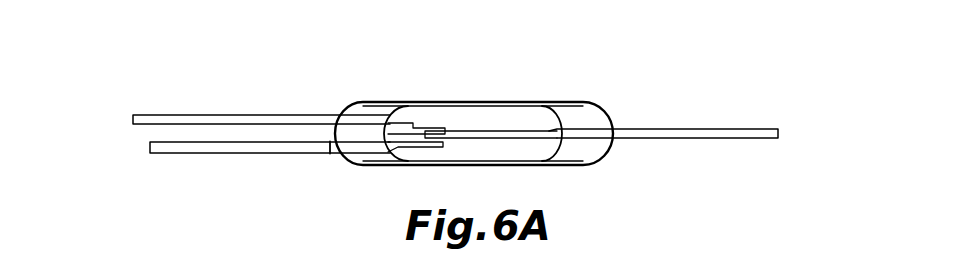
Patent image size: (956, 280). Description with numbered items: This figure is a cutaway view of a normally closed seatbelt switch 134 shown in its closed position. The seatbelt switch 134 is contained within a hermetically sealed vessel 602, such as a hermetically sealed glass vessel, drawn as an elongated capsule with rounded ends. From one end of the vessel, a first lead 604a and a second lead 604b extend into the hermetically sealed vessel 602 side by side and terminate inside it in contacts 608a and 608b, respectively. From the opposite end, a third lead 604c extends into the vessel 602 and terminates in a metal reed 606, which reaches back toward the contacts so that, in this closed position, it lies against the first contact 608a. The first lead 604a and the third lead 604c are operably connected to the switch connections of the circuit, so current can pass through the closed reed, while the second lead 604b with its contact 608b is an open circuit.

The seatbelt switch 134 is at (497, 62).
The hermetically sealed vessel 602 is at (606, 112).
The first lead 604a is at (177, 114).
The second lead 604b is at (168, 154).
The third lead 604c is at (737, 128).
The metal reed 606 is at (493, 139).
The first contact 608a is at (428, 121).
The second contact 608b is at (421, 150).